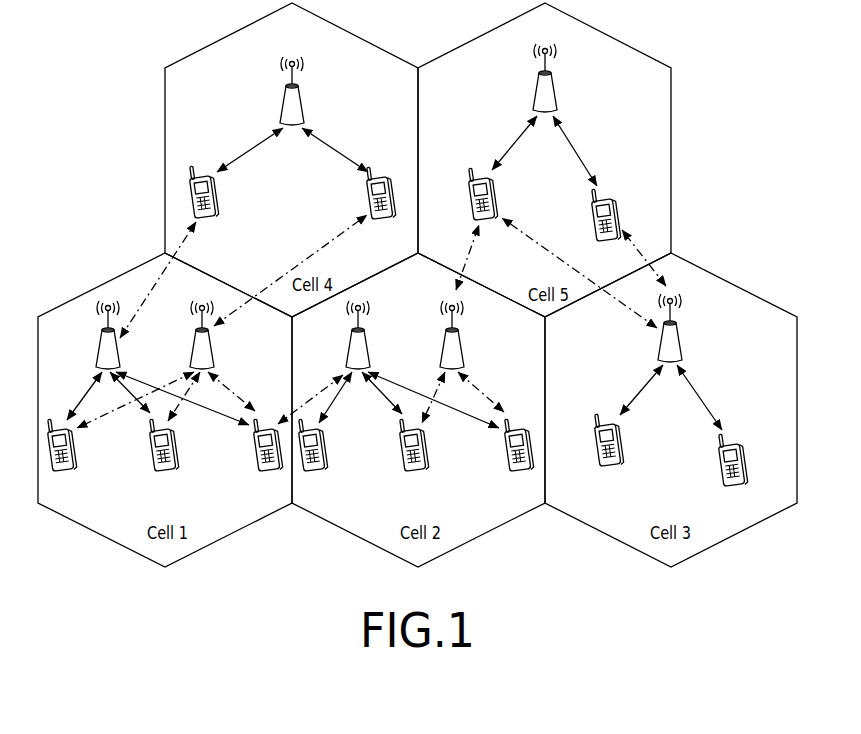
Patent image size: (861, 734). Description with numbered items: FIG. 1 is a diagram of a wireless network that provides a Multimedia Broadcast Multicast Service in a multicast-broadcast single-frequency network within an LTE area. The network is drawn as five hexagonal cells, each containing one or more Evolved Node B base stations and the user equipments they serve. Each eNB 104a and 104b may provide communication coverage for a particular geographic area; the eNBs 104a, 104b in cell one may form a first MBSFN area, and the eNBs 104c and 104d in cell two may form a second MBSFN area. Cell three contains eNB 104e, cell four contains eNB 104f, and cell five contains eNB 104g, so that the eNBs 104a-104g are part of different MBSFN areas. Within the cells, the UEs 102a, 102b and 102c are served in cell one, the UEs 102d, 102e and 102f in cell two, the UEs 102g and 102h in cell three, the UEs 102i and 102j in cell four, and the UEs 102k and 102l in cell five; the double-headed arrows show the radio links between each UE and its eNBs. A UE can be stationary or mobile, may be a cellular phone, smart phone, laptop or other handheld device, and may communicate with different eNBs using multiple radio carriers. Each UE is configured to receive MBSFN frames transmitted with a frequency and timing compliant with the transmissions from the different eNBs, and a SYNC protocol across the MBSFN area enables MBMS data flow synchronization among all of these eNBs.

The UE 102a is at (73, 451).
The UE 102b is at (176, 451).
The UE 102c is at (272, 472).
The UE 102d is at (325, 451).
The UE 102e is at (426, 451).
The UE 102f is at (522, 472).
The UE 102g is at (622, 444).
The UE 102h is at (720, 478).
The UE 102i is at (214, 200).
The UE 102j is at (370, 199).
The UE 102k is at (494, 186).
The UE 102l is at (594, 214).
The eNB 104a is at (100, 347).
The eNB 104b is at (208, 347).
The eNB 104c is at (364, 347).
The eNB 104d is at (458, 347).
The eNB 104e is at (677, 342).
The eNB 104f is at (286, 103).
The eNB 104g is at (539, 92).